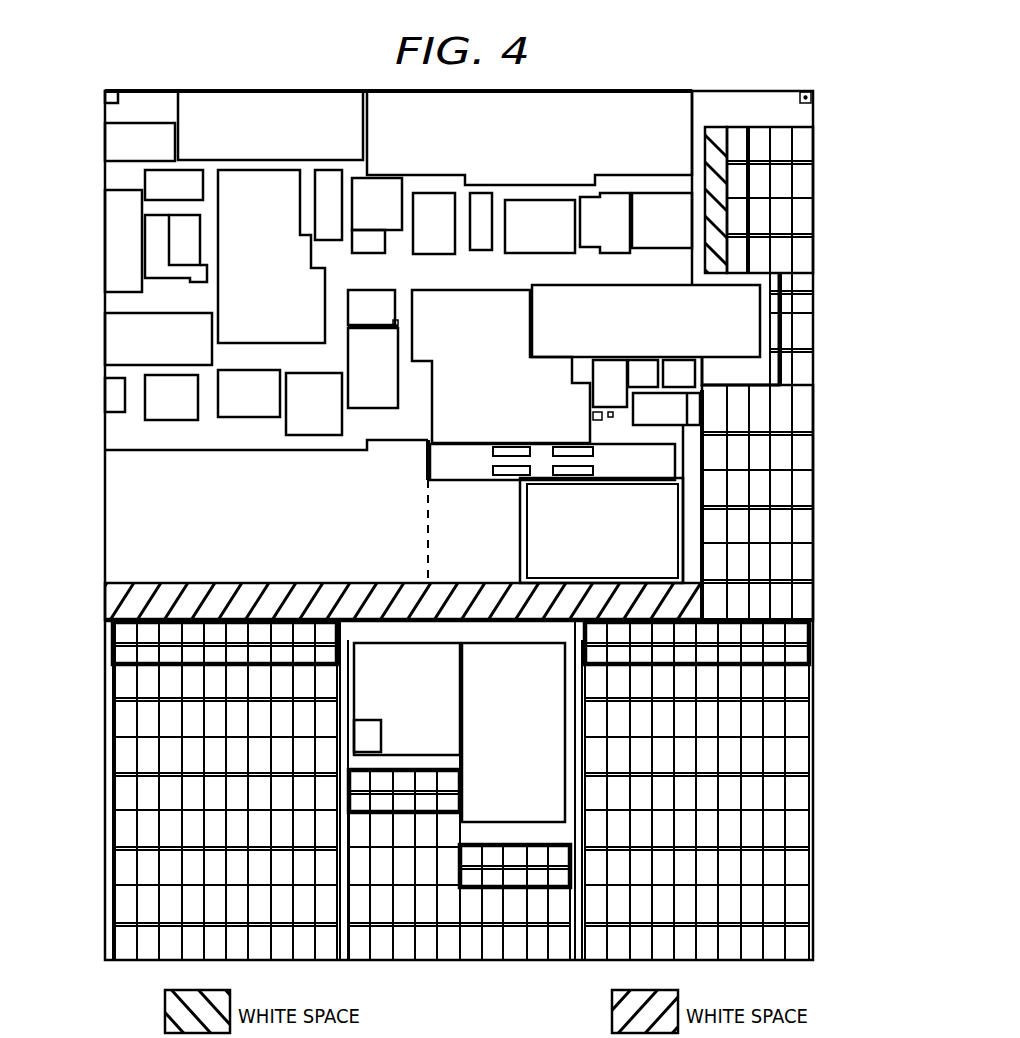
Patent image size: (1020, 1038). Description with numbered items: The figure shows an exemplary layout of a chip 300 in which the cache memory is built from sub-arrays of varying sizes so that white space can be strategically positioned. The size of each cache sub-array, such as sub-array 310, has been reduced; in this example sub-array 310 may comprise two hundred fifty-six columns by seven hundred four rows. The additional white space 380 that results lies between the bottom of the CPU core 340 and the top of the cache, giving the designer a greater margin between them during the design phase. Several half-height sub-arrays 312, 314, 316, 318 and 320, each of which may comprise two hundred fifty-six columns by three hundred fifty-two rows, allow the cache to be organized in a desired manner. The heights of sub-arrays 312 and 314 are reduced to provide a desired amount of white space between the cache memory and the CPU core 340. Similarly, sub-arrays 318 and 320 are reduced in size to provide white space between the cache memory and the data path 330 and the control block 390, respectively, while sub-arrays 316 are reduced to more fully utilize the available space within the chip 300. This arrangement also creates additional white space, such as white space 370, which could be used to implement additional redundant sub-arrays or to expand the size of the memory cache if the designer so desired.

The chip 300 is at (626, 66).
The sub-array 310 is at (808, 413).
The half-height sub-array 312 is at (110, 652).
The half-height sub-array 314 is at (812, 634).
The half-height sub-arrays 316 is at (790, 273).
The half-height sub-array 318 is at (517, 888).
The half-height sub-array 320 is at (462, 783).
The data path 330 is at (532, 765).
The CPU core 340 is at (285, 527).
The white space 370 is at (714, 132).
The white space 380 is at (164, 590).
The control block 390 is at (426, 728).